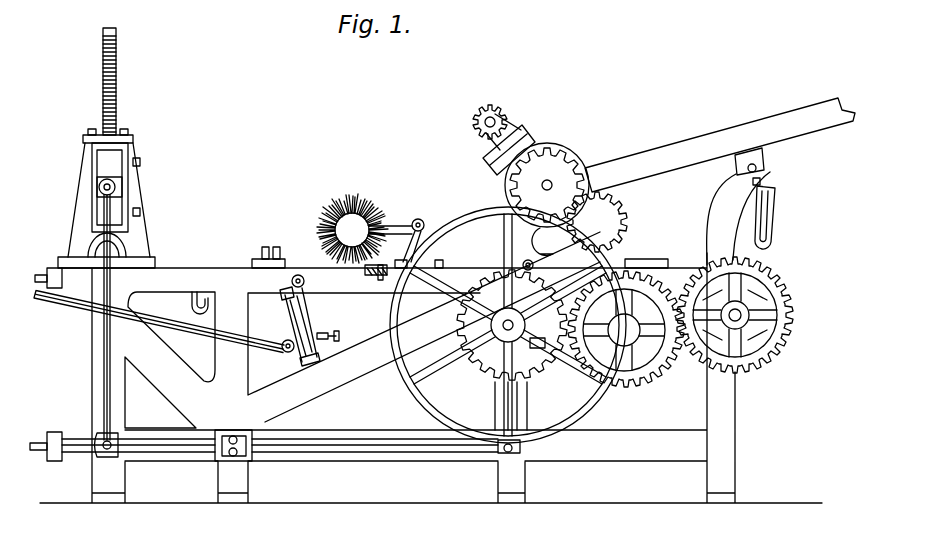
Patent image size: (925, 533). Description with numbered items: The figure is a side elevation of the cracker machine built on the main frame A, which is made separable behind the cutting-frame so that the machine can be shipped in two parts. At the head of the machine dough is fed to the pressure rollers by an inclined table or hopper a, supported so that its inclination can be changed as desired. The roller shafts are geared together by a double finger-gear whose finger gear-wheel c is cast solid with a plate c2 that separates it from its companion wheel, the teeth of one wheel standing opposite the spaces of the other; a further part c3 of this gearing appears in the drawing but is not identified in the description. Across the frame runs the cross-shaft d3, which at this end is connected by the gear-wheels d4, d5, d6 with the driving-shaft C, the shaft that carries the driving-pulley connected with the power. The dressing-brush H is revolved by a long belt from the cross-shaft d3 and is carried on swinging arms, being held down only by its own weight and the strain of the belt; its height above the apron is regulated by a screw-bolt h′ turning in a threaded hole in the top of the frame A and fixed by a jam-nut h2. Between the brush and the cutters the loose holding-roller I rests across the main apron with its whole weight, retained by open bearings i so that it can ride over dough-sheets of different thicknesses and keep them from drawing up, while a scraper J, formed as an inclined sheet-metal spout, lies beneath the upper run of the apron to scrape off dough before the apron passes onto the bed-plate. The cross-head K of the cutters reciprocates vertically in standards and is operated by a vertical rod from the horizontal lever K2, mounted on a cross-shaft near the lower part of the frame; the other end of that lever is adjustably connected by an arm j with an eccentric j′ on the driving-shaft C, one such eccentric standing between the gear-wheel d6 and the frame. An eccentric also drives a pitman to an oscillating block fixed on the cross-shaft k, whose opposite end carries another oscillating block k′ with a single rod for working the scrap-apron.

The main frame A is at (426, 367).
The cross-head of the cutters K is at (123, 188).
The open bearings i is at (262, 250).
The holding-roller I is at (276, 256).
The scraper J is at (204, 297).
The horizontal lever K2 is at (200, 458).
The cross-shaft k is at (207, 335).
The oscillating block k′ is at (312, 363).
The dressing-brush H is at (358, 194).
The screw-bolt h′ is at (388, 236).
The jam-nut h2 is at (365, 273).
The arms j is at (497, 380).
The eccentrics j′ is at (525, 362).
The gear-wheel d6 is at (543, 362).
The driving-shaft C is at (503, 335).
The gear-wheel d5 is at (650, 368).
The gear-wheel d4 is at (785, 332).
The cross-shaft d3 is at (738, 320).
The finger gear-wheel c is at (578, 163).
The plate c2 is at (555, 158).
The gear c3 is at (620, 152).
The inclined table or hopper a is at (752, 121).